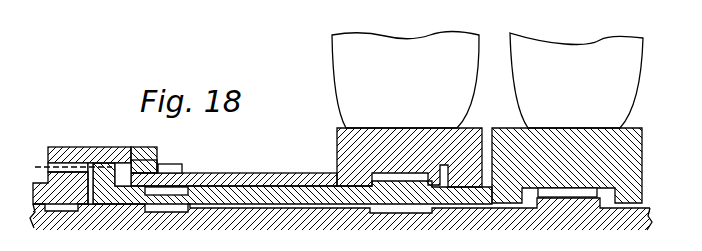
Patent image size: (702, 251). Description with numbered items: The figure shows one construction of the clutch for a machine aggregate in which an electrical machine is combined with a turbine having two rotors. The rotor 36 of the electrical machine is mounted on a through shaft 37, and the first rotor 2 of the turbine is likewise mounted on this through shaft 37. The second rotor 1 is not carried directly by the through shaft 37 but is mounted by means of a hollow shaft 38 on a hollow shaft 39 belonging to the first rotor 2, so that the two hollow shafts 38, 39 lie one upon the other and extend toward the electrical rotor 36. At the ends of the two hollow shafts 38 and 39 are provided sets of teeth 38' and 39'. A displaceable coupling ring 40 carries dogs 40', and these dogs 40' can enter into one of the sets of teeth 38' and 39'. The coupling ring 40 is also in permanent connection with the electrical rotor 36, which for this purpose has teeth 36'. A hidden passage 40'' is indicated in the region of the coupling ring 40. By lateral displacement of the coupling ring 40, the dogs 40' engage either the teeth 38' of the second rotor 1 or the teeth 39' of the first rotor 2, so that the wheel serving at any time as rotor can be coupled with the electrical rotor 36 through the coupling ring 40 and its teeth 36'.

The second rotor 1 is at (407, 110).
The first rotor 2 is at (567, 118).
The rotor of the electrical machine 36 is at (60, 188).
The teeth 36' is at (57, 149).
The through shaft 37 is at (341, 207).
The hollow shaft 38 is at (234, 170).
The set of teeth 38' is at (183, 161).
The hollow shaft 39 is at (292, 199).
The set of teeth 39' is at (92, 165).
The coupling ring 40 is at (102, 149).
The dogs 40' is at (160, 157).
The hidden passage 40'' is at (58, 164).